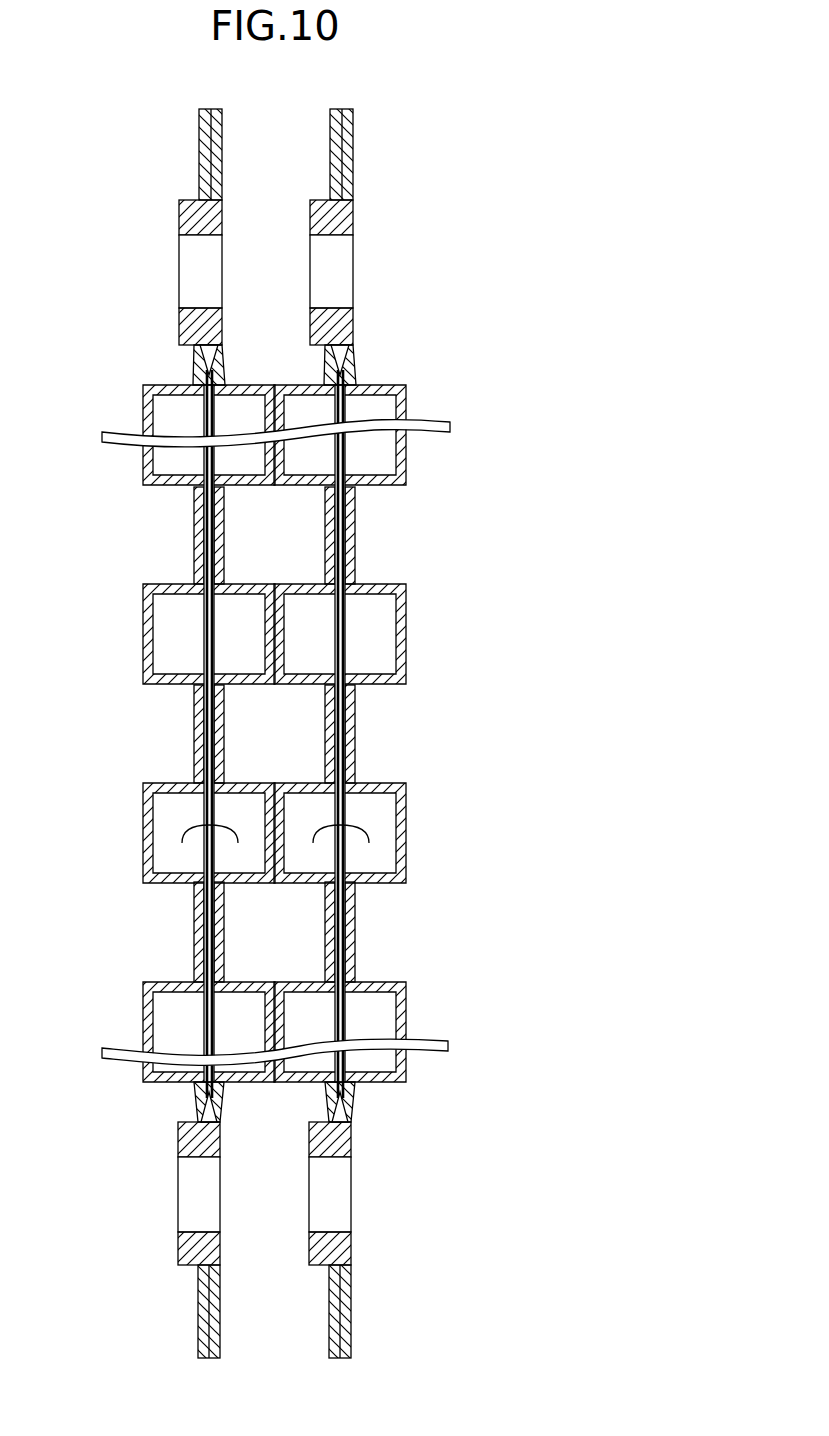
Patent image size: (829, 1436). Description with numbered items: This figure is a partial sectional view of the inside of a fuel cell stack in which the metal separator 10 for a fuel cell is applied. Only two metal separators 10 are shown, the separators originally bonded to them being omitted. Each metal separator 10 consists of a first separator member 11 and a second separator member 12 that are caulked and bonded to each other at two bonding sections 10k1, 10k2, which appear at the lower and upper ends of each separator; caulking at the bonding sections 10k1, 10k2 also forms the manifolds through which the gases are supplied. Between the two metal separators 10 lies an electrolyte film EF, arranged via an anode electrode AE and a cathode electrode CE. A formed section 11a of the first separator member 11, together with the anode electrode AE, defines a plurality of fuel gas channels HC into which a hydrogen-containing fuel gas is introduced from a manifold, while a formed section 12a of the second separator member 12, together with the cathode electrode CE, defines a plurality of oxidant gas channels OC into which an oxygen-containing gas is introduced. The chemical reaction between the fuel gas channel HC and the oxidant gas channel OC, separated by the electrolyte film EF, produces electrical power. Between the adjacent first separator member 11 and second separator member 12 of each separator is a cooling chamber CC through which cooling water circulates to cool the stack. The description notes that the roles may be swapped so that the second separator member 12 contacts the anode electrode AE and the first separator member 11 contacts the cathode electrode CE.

The metal separator for a fuel cell 10 is at (177, 110).
The bonding section 10k1 is at (231, 1200).
The bonding section 10k2 is at (233, 267).
The electrolyte film EF is at (197, 360).
The first separator member 11 is at (224, 531).
The second separator member 12 is at (194, 530).
The formed section 11a is at (238, 604).
The formed section 12a is at (178, 604).
The fuel gas channel HC is at (253, 665).
The cooling chamber CC is at (312, 735).
The oxidant gas channel OC is at (293, 800).
The cathode electrode CE is at (250, 849).
The anode electrode AE is at (298, 849).